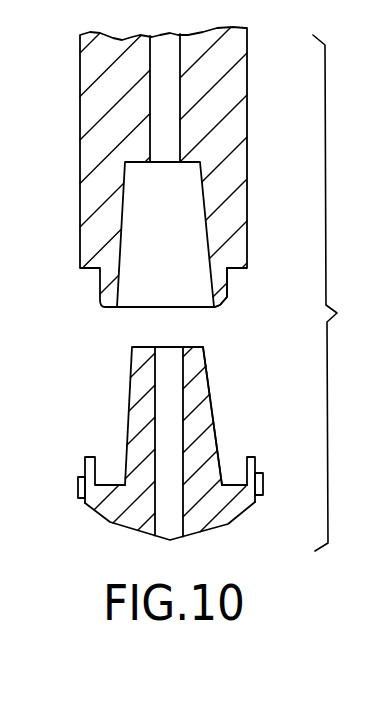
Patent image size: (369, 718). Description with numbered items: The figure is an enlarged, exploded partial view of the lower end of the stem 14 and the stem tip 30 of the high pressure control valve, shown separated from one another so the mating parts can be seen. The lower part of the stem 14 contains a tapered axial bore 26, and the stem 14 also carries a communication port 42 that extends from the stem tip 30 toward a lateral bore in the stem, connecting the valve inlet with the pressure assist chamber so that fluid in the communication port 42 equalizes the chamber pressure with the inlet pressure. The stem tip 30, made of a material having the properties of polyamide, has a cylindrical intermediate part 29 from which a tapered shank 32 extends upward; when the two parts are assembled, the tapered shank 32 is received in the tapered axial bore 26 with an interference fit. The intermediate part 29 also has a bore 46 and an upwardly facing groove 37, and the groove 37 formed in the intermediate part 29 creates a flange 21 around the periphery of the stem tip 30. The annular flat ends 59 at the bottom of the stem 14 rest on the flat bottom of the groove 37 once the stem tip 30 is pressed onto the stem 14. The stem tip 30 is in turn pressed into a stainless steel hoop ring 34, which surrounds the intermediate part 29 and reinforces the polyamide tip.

The stem 14 is at (80, 70).
The communication port 42 is at (150, 108).
The tapered axial bore 26 is at (123, 232).
The annular flat ends 59 is at (220, 305).
The tapered shank 32 is at (130, 397).
The bore 46 is at (168, 356).
The groove 37 is at (227, 467).
The flange 21 is at (257, 465).
The cylindrical intermediate part 29 is at (84, 462).
The stem tip 30 is at (262, 490).
The hoop ring 34 is at (80, 493).